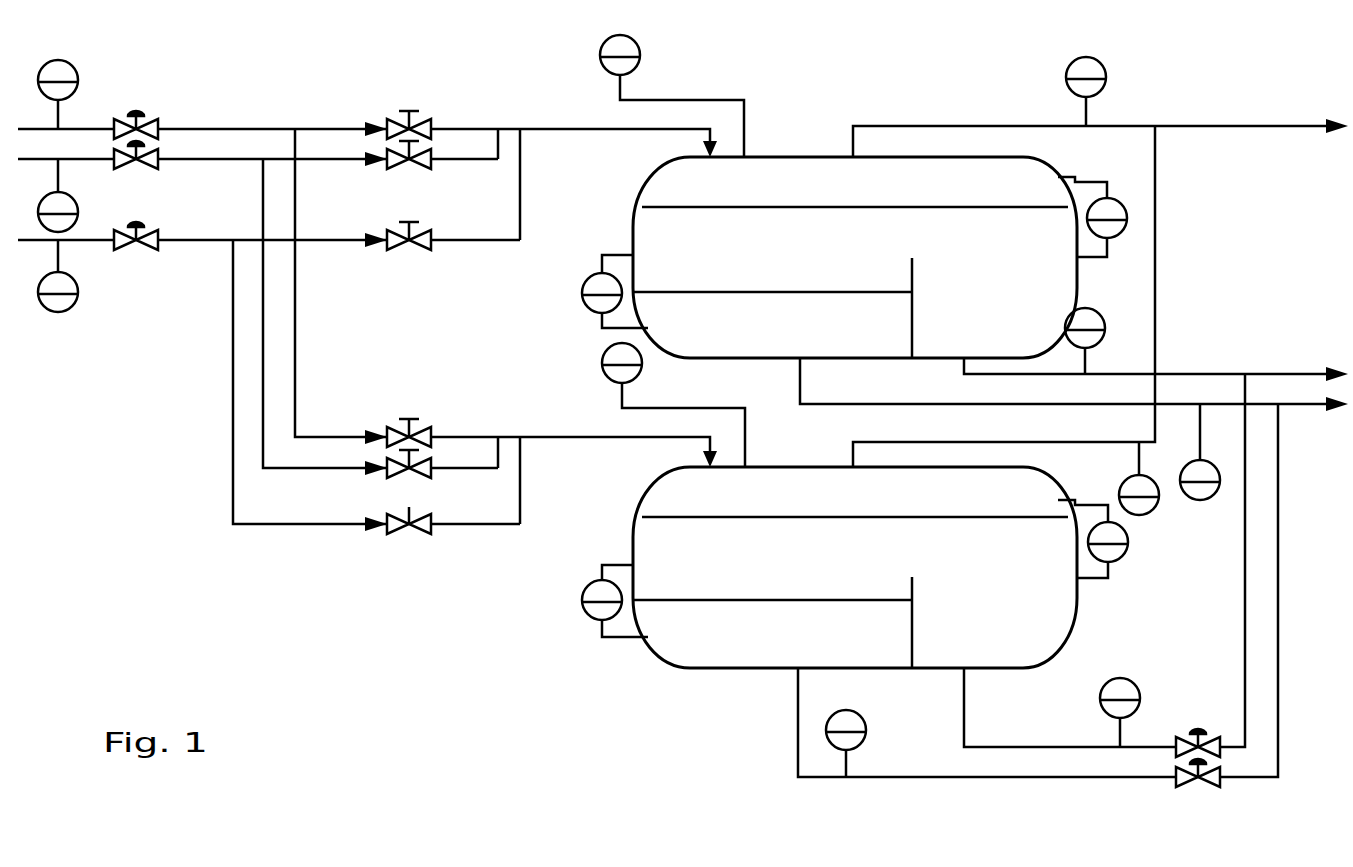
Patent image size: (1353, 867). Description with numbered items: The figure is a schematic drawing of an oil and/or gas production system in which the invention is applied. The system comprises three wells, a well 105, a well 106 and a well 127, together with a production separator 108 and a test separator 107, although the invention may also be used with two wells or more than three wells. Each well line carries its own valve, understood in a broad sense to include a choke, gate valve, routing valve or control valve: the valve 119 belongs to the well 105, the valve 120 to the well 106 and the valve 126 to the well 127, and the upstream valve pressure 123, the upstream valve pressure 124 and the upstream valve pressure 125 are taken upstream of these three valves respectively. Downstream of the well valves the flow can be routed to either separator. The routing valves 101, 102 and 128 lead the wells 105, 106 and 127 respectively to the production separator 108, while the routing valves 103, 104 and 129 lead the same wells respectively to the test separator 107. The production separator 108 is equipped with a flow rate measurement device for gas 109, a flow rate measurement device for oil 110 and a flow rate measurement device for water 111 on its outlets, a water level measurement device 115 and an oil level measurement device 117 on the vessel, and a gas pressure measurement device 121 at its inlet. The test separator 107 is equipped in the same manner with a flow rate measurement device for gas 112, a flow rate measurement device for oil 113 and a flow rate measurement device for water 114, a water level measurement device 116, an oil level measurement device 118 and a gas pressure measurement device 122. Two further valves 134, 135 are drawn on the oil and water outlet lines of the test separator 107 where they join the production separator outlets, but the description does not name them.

The routing valve 101 is at (552, 157).
The routing valve 102 is at (442, 169).
The routing valve 103 is at (552, 459).
The routing valve 104 is at (442, 476).
The well 105 is at (202, 268).
The well 106 is at (202, 313).
The test separator 107 is at (855, 567).
The production separator 108 is at (855, 257).
The flow rate measurement device for gas 109 is at (1100, 262).
The flow rate measurement device for oil 110 is at (1156, 344).
The flow rate measurement device for water 111 is at (1074, 442).
The flow rate measurement device for gas 112 is at (1126, 478).
The flow rate measurement device for oil 113 is at (1104, 560).
The flow rate measurement device for water 114 is at (1038, 590).
The water level measurement device 115 is at (615, 291).
The water level measurement device 116 is at (615, 601).
The oil level measurement device 117 is at (1092, 217).
The oil level measurement device 118 is at (1093, 539).
The valve 119 is at (136, 110).
The valve 120 is at (136, 171).
The gas pressure measurement device 121 is at (672, 96).
The gas pressure measurement device 122 is at (673, 405).
The upstream valve pressure 123 is at (70, 94).
The upstream valve pressure 124 is at (71, 195).
The upstream valve pressure 125 is at (69, 276).
The valve 126 is at (136, 253).
The well 127 is at (202, 382).
The routing valve 128 is at (453, 252).
The routing valve 129 is at (453, 537).
The outlet valve 134 is at (1198, 728).
The outlet valve 135 is at (1198, 789).